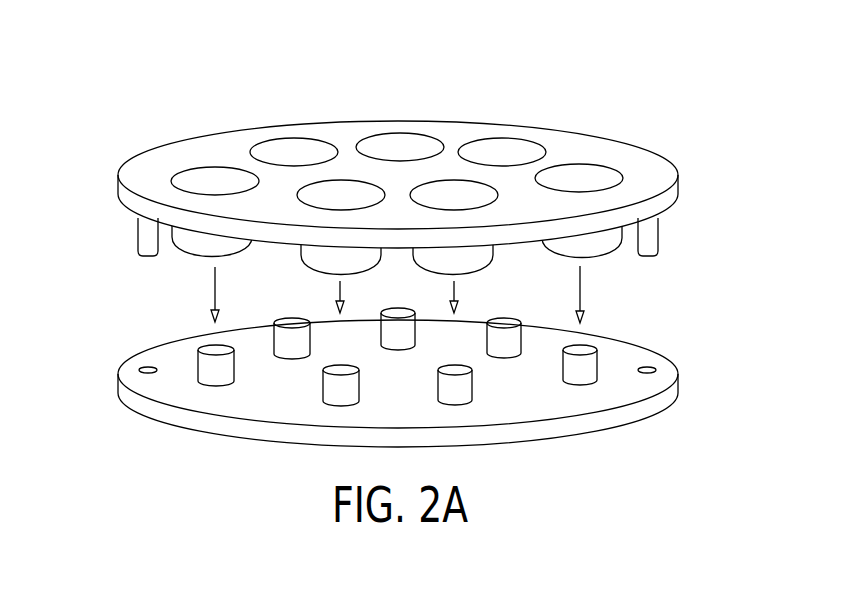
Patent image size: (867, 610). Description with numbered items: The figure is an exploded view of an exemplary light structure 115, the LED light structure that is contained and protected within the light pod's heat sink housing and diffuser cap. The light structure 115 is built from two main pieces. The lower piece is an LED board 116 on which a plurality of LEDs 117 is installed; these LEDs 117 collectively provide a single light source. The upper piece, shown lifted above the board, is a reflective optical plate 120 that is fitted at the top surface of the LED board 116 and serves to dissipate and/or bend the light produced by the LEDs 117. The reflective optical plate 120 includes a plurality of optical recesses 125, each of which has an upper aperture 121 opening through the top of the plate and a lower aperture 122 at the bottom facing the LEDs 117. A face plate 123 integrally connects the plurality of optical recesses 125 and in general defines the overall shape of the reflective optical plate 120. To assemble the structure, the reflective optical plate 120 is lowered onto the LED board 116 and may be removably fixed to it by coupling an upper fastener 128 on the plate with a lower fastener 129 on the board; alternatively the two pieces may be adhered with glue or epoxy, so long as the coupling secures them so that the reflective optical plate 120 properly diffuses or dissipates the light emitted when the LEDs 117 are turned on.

The light structure 115 is at (535, 66).
The LED board 116 is at (118, 389).
The LEDs 117 is at (214, 347).
The reflective optical plate 120 is at (210, 124).
The upper aperture 121 is at (595, 175).
The lower aperture 122 is at (594, 255).
The face plate 123 is at (397, 125).
The optical recesses 125 is at (203, 257).
The upper fastener 128 is at (654, 228).
The lower fastener 129 is at (649, 367).